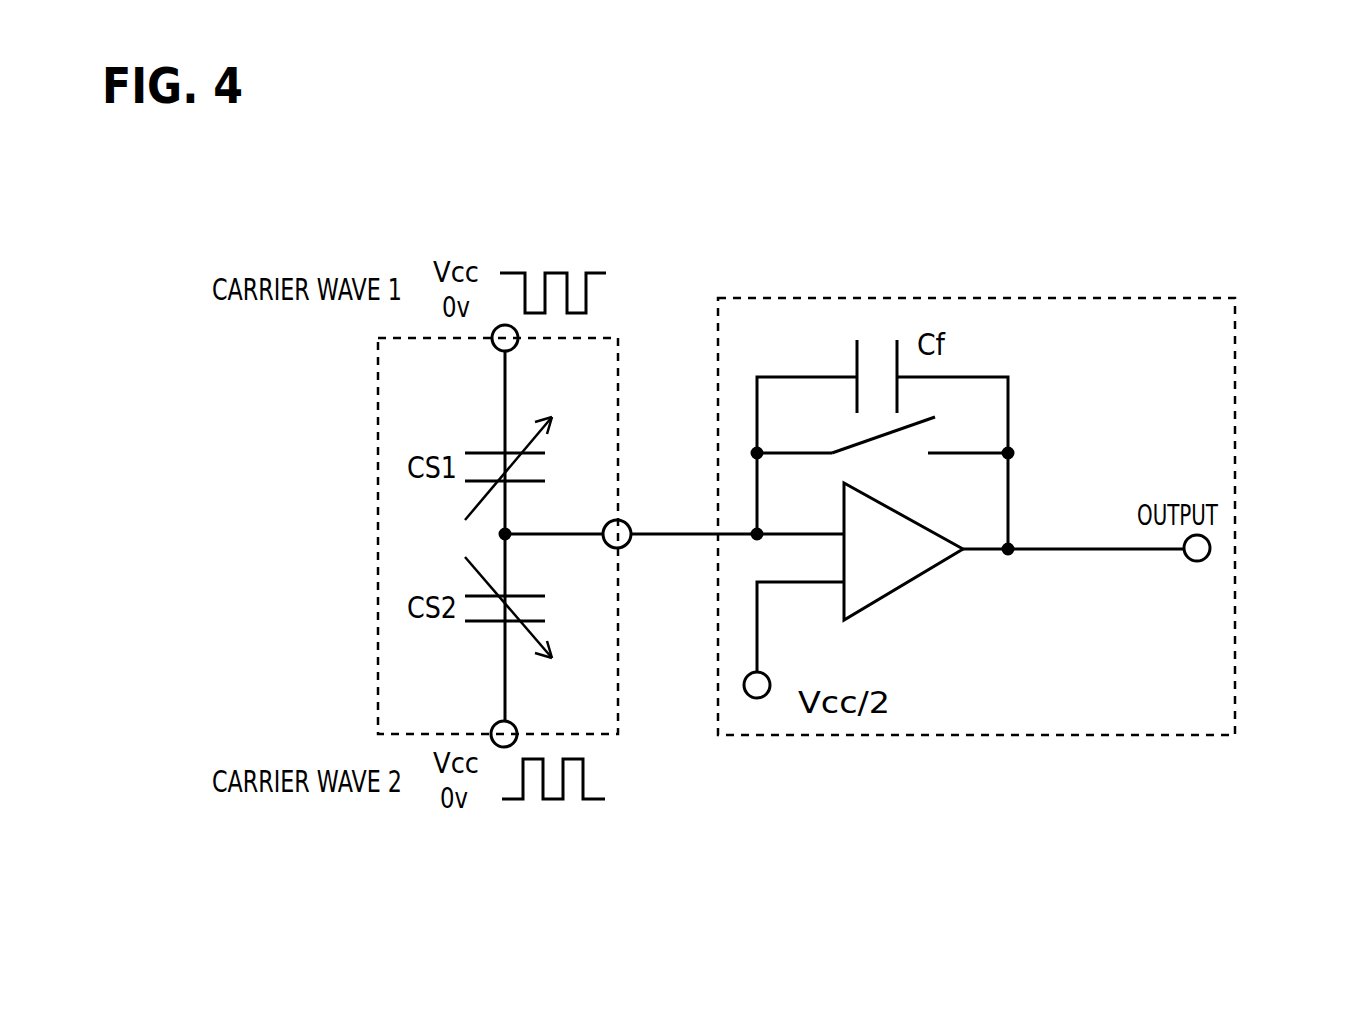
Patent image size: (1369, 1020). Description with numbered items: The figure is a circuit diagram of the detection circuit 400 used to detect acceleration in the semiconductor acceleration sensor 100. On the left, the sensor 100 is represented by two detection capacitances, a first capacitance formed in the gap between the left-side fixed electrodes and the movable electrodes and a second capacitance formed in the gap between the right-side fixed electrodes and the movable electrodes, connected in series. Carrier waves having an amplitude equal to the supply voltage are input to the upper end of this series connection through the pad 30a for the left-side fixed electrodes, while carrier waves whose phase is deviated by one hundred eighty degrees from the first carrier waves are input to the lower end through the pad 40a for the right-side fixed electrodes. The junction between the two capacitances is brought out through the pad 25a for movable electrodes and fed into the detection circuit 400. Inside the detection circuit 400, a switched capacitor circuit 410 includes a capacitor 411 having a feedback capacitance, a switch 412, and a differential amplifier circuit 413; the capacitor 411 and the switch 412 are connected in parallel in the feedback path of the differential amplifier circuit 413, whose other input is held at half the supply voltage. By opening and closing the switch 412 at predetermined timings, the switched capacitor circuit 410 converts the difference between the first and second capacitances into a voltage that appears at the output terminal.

The semiconductor acceleration sensor 100 is at (376, 397).
The pad for the left-side fixed electrodes 30a is at (518, 347).
The pad for the right-side fixed electrodes 40a is at (492, 726).
The pad for movable electrodes 25a is at (623, 548).
The detection circuit 400 is at (989, 514).
The switched capacitor circuit 410 is at (918, 478).
The capacitor 411 is at (873, 342).
The switch 412 is at (935, 417).
The differential amplifier circuit 413 is at (890, 600).